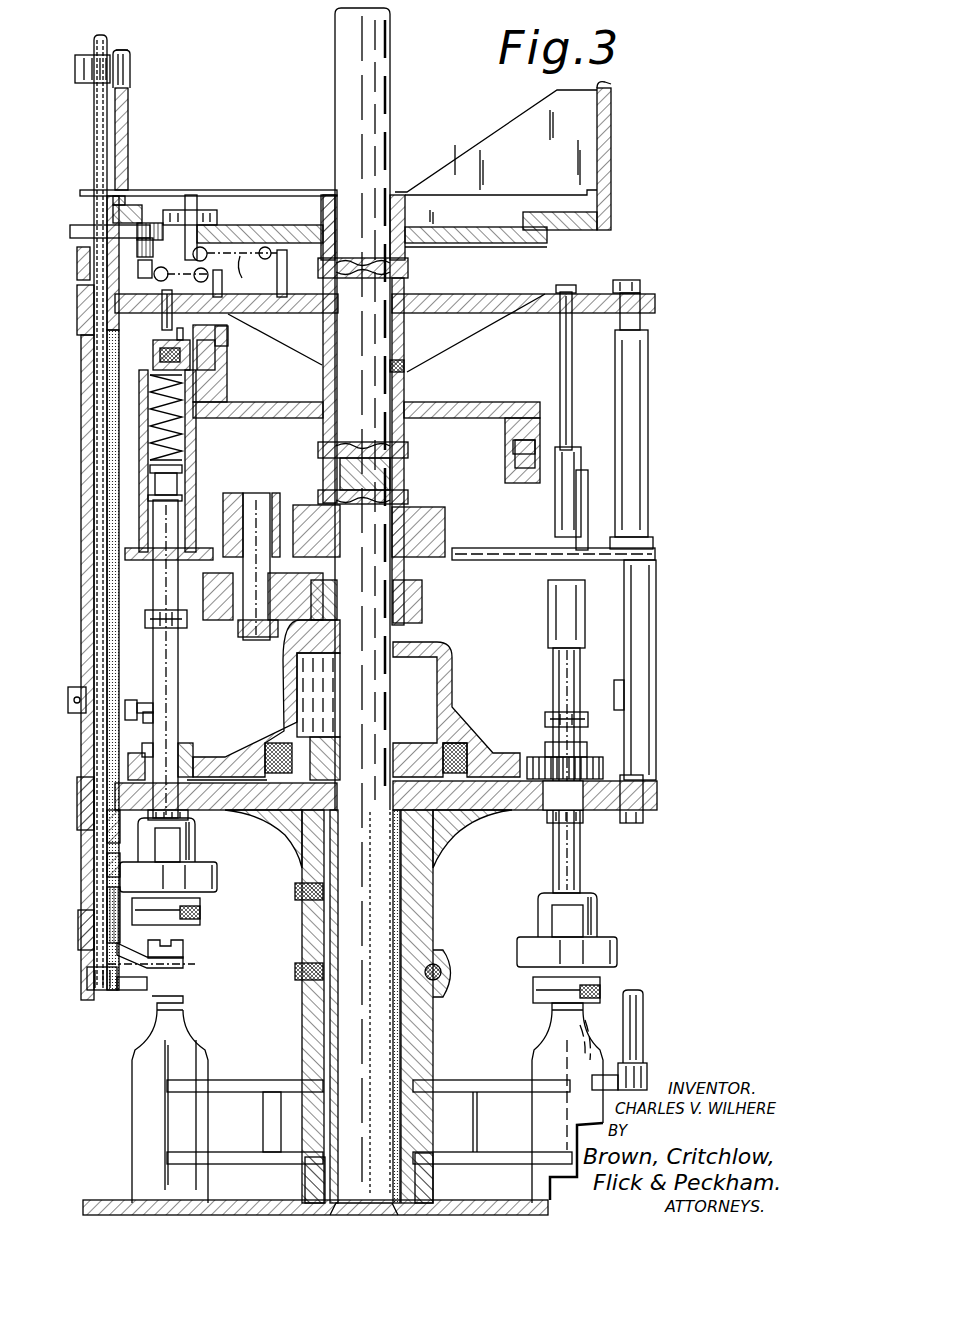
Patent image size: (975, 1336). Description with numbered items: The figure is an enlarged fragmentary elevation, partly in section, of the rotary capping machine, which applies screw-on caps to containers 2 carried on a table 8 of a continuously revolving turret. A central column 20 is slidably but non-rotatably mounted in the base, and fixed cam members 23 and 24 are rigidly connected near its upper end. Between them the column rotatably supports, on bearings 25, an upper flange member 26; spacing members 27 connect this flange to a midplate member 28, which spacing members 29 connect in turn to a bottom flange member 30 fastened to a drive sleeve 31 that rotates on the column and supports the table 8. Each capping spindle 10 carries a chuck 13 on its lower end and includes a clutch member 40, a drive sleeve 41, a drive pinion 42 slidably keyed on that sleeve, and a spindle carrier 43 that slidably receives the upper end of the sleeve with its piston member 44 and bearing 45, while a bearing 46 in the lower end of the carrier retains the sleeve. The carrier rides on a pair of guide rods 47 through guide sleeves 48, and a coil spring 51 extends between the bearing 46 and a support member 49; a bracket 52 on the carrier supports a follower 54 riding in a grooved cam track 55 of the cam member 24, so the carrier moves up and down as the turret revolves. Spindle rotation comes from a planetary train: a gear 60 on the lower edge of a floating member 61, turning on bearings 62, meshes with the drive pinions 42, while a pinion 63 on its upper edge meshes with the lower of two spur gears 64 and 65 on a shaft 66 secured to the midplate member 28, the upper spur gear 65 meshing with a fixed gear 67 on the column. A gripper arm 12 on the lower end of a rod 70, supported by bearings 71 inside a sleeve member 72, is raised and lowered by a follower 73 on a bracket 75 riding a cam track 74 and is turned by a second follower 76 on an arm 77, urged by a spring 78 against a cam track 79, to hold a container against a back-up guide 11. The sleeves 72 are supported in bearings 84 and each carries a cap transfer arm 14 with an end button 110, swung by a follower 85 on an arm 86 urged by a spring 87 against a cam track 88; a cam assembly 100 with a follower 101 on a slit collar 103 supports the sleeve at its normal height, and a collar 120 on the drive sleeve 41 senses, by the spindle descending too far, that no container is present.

The containers 2 is at (135, 1115).
The table 8 is at (105, 1200).
The capping spindle 10 is at (231, 877).
The back-up guide 11 is at (258, 1080).
The gripper arm 12 is at (122, 992).
The chuck 13 is at (203, 914).
The cap transfer arm 14 is at (190, 961).
The central column 20 is at (375, 115).
The cam member 23 is at (612, 160).
The cam member 24 is at (232, 386).
The bearings 25 is at (410, 385).
The upper flange member 26 is at (470, 294).
The spacing members 27 is at (648, 450).
The midplate member 28 is at (132, 560).
The spacing members 29 is at (656, 648).
The bottom flange member 30 is at (245, 806).
The drive sleeve 31 is at (420, 1036).
The clutch member 40 is at (217, 886).
The drive sleeve 41 is at (178, 678).
The drive pinion 42 is at (193, 752).
The spindle carrier 43 is at (196, 436).
The piston member 44 is at (190, 486).
The bearing 45 is at (190, 472).
The bearing 46 is at (190, 500).
The guide rods 47 is at (162, 326).
The guide sleeves 48 is at (581, 465).
The support member 49 is at (153, 360).
The coil spring 51 is at (150, 432).
The bracket 52 is at (181, 325).
The follower 54 is at (222, 362).
The cam track 55 is at (222, 348).
The gear 60 is at (527, 760).
The floating member 61 is at (452, 668).
The bearings 62 is at (468, 745).
The pinion 63 is at (422, 602).
The spur gear 64 is at (228, 618).
The spur gear 65 is at (292, 505).
The shaft 66 is at (256, 642).
The fixed gear 67 is at (425, 518).
The rod 70 is at (96, 908).
The bearings 71 is at (105, 950).
The sleeve member 72 is at (88, 885).
The follower 73 is at (128, 47).
The cam track 74 is at (611, 86).
The bracket 75 is at (80, 83).
The second follower 76 is at (212, 206).
The arm 77 is at (155, 193).
The spring 78 is at (243, 272).
The cam track 79 is at (525, 220).
The bearings 84 is at (85, 340).
The follower 85 is at (70, 232).
The arm 86 is at (77, 262).
The spring 87 is at (210, 276).
The cam track 88 is at (548, 236).
The cam assembly 100 is at (133, 698).
The follower 101 is at (153, 706).
The slit collar 103 is at (68, 700).
The button 110 is at (185, 942).
The collar 120 is at (152, 628).